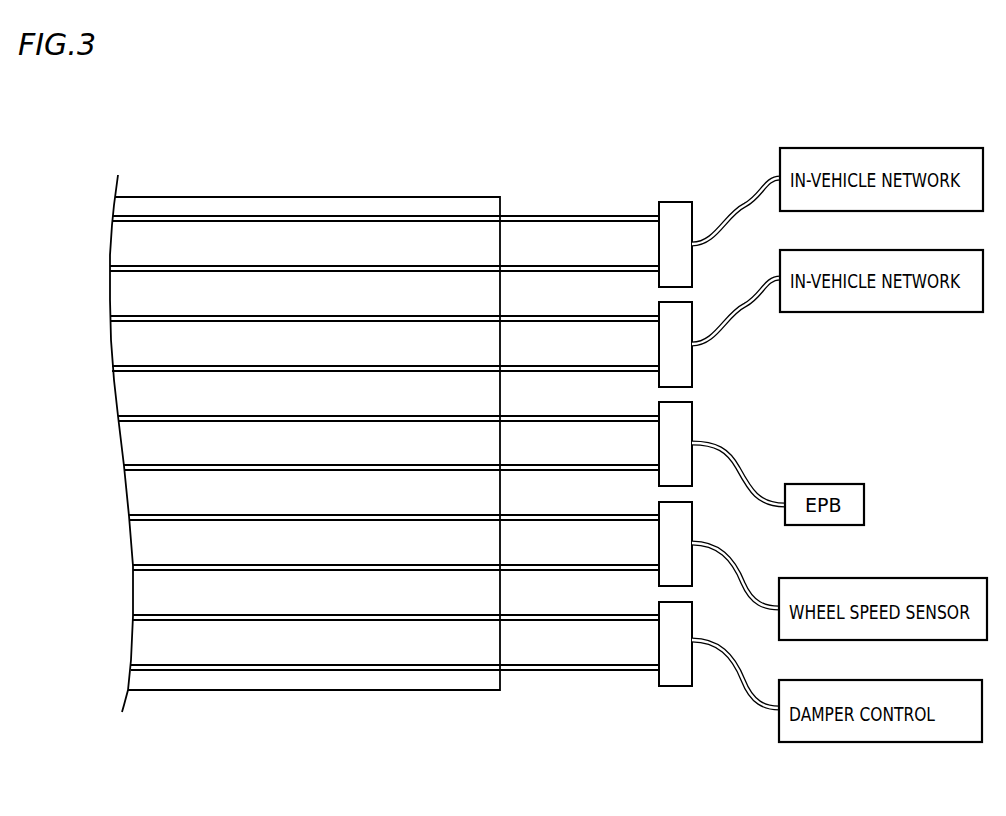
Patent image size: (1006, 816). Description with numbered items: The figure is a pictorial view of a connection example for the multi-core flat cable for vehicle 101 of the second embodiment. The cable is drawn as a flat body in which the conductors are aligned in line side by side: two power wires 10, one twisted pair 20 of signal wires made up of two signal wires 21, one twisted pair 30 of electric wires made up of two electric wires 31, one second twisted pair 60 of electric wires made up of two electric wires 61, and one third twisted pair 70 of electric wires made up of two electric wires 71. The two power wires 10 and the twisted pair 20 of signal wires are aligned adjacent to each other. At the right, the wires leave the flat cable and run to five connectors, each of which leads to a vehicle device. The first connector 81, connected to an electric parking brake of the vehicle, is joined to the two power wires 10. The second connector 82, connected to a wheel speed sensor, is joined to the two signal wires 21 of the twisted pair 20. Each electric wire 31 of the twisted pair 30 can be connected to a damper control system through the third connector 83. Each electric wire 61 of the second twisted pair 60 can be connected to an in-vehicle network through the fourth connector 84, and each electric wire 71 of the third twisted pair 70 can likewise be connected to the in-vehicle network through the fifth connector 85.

The multi-core flat cable for vehicle 101 is at (152, 162).
The power wires 10 is at (148, 424).
The twisted pair of signal wires 20 is at (394, 653).
The signal wires 21 is at (185, 521).
The twisted pair of electric wires 30 is at (395, 715).
The electric wires 31 is at (353, 621).
The second twisted pair of electric wires 60 is at (384, 233).
The electric wires 61 is at (183, 366).
The third twisted pair of electric wires 70 is at (384, 171).
The electric wires 71 is at (360, 266).
The first connector 81 is at (672, 442).
The second connector 82 is at (672, 542).
The third connector 83 is at (672, 640).
The fourth connector 84 is at (672, 344).
The fifth connector 85 is at (672, 244).